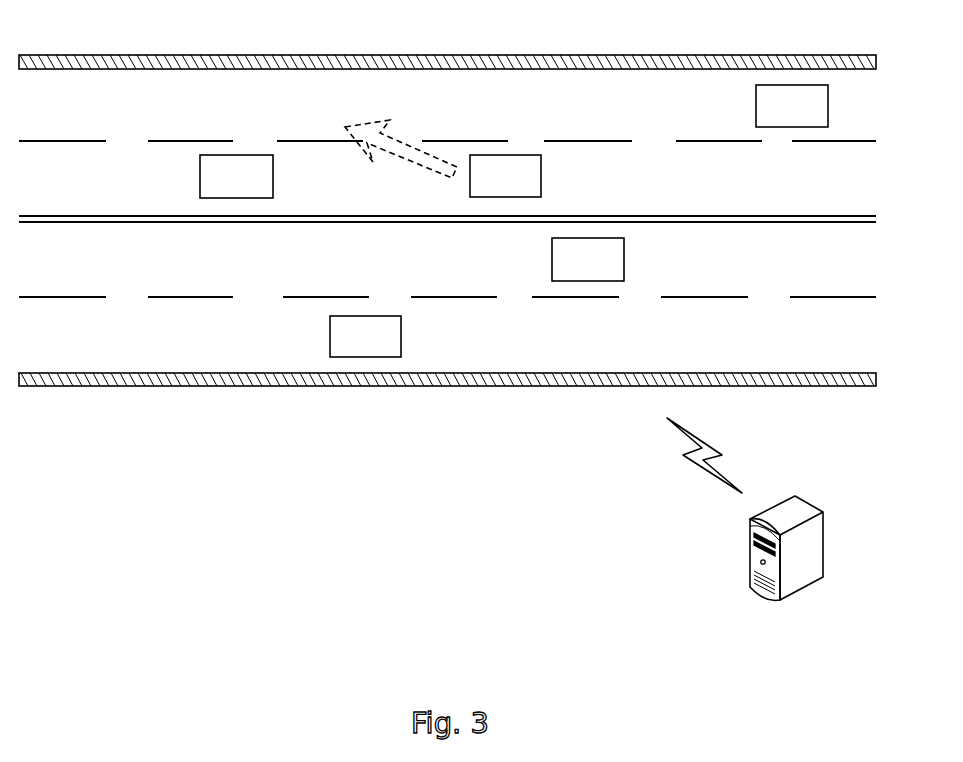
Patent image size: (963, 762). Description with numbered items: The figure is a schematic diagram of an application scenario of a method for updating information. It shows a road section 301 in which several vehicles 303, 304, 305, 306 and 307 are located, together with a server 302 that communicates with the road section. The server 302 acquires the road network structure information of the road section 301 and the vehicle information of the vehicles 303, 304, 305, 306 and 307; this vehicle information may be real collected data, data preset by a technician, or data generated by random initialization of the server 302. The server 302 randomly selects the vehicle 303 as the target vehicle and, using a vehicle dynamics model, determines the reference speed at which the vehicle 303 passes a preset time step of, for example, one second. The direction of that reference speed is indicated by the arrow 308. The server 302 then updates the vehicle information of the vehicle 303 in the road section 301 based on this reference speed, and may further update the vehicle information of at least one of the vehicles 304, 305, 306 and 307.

The road section 301 is at (826, 56).
The server 302 is at (786, 563).
The vehicle 303 is at (505, 176).
The vehicle 304 is at (236, 176).
The vehicle 305 is at (792, 106).
The vehicle 306 is at (588, 259).
The vehicle 307 is at (365, 336).
The direction of the reference speed 308 is at (374, 123).